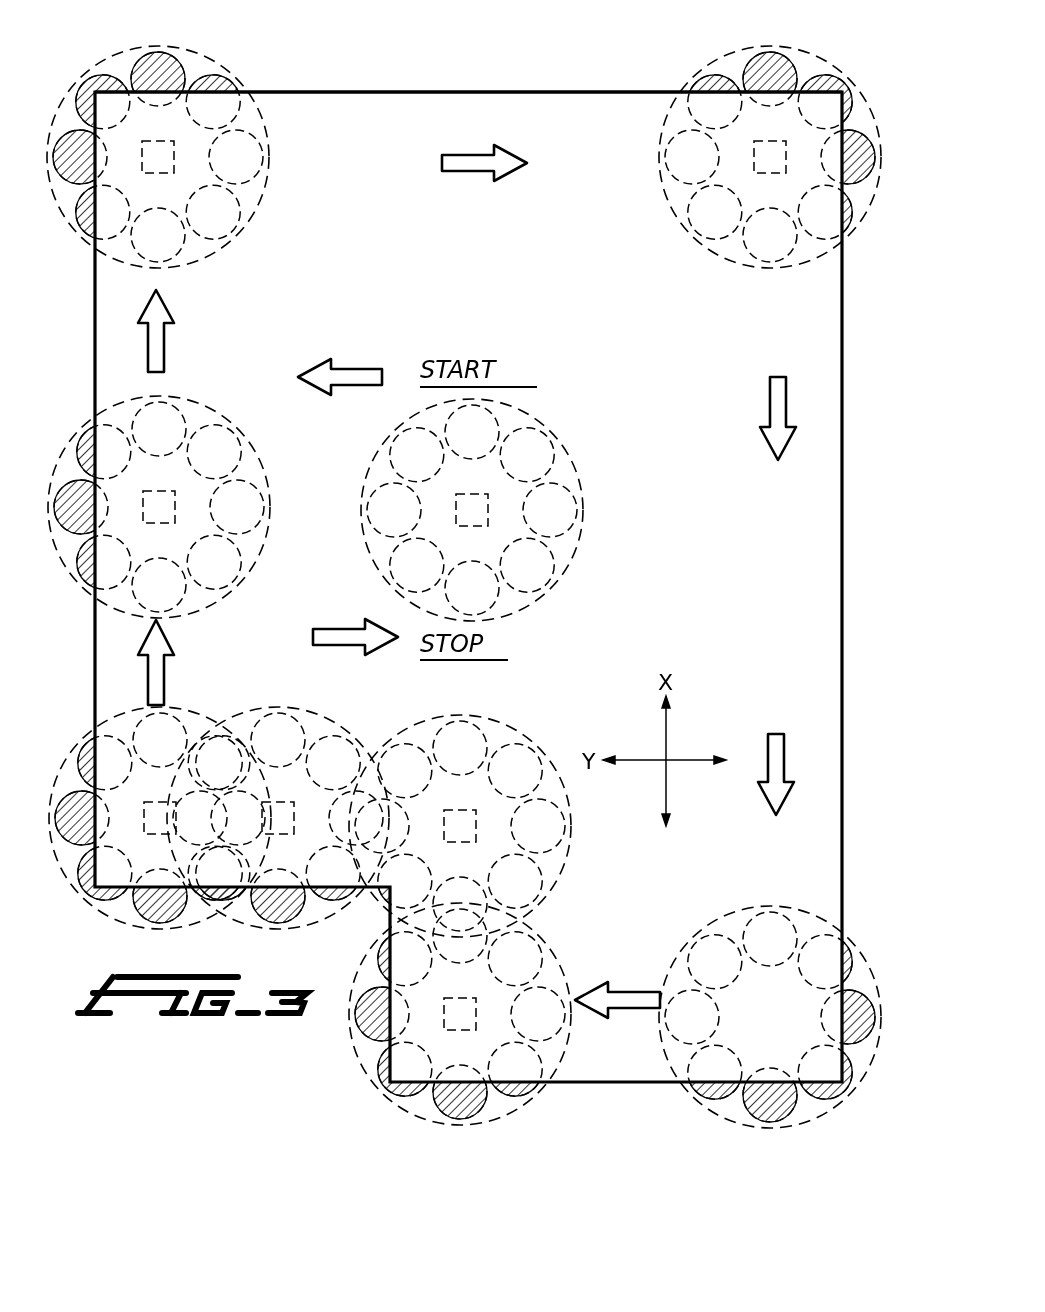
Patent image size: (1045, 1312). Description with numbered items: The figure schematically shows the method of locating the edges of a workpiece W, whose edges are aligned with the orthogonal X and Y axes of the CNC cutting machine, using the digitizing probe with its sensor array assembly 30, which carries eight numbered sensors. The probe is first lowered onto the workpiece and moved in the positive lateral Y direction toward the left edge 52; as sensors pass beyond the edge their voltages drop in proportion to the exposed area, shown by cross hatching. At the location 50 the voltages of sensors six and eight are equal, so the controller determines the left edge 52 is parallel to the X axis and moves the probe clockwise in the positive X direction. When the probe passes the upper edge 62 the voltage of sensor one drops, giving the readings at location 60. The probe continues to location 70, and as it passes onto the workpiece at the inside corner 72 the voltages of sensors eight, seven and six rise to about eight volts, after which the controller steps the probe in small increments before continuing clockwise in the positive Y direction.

The sensor array assembly 30 is at (575, 458).
The location of the digitizing probe at the left edge 50 is at (255, 392).
The left edge of the workpiece 52 is at (95, 302).
The location of the digitizing probe at the upper edge 60 is at (220, 62).
The upper edge of the workpiece 62 is at (495, 92).
The location of the digitizing probe near the inside corner 70 is at (572, 852).
The inside corner of the workpiece 72 is at (385, 897).